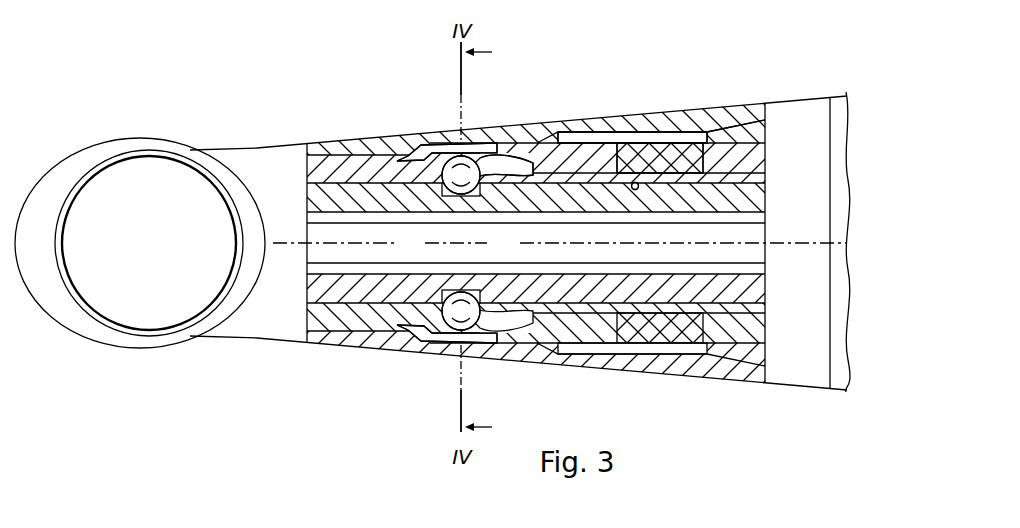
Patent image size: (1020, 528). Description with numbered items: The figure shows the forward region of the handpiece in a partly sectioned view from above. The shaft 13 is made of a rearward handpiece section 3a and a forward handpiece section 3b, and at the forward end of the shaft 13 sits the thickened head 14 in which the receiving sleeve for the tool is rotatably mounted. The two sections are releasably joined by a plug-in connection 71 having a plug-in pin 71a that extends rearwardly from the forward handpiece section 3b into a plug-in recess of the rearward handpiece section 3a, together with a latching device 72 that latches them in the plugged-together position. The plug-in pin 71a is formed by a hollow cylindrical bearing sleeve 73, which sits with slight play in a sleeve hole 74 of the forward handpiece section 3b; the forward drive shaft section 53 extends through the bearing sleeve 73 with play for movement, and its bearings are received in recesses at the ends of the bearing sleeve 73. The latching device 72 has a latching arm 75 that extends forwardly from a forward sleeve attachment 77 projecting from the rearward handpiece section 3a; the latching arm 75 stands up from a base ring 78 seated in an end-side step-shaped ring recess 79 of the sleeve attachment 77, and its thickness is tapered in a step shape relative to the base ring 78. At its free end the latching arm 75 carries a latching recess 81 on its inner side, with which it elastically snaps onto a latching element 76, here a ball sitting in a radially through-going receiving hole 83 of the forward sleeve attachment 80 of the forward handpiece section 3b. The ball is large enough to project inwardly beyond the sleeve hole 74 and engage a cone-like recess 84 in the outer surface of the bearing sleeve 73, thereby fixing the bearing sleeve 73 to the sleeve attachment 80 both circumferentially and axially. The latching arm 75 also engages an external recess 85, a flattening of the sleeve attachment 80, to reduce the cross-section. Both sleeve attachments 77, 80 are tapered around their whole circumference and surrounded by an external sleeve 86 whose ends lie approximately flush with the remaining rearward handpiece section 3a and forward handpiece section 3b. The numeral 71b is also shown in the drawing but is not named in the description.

The thickened head 14 is at (84, 153).
The forward handpiece section 3b is at (252, 140).
The rearward handpiece section 3a is at (789, 88).
The shaft 13 is at (528, 115).
The external sleeve 86 is at (326, 150).
The external recess 85 is at (405, 152).
The latching device 72 is at (450, 135).
The latching arm 75 is at (493, 160).
The base ring 78 is at (577, 131).
The step-shaped ring recess 79 is at (580, 150).
The bore of locking element 71b is at (636, 182).
The bearing sleeve 73 is at (683, 197).
The forward sleeve attachment 77 is at (745, 163).
The recess 84 is at (437, 290).
The receiving hole 83 is at (485, 307).
The third drive shaft section 53 is at (753, 303).
The forward sleeve attachment 80 is at (317, 340).
The sleeve hole 74 is at (335, 335).
The plug-in connection 71 is at (412, 362).
The latching recess 81 is at (440, 340).
The latching element 76 is at (512, 350).
The plug-in pin 71a is at (628, 348).